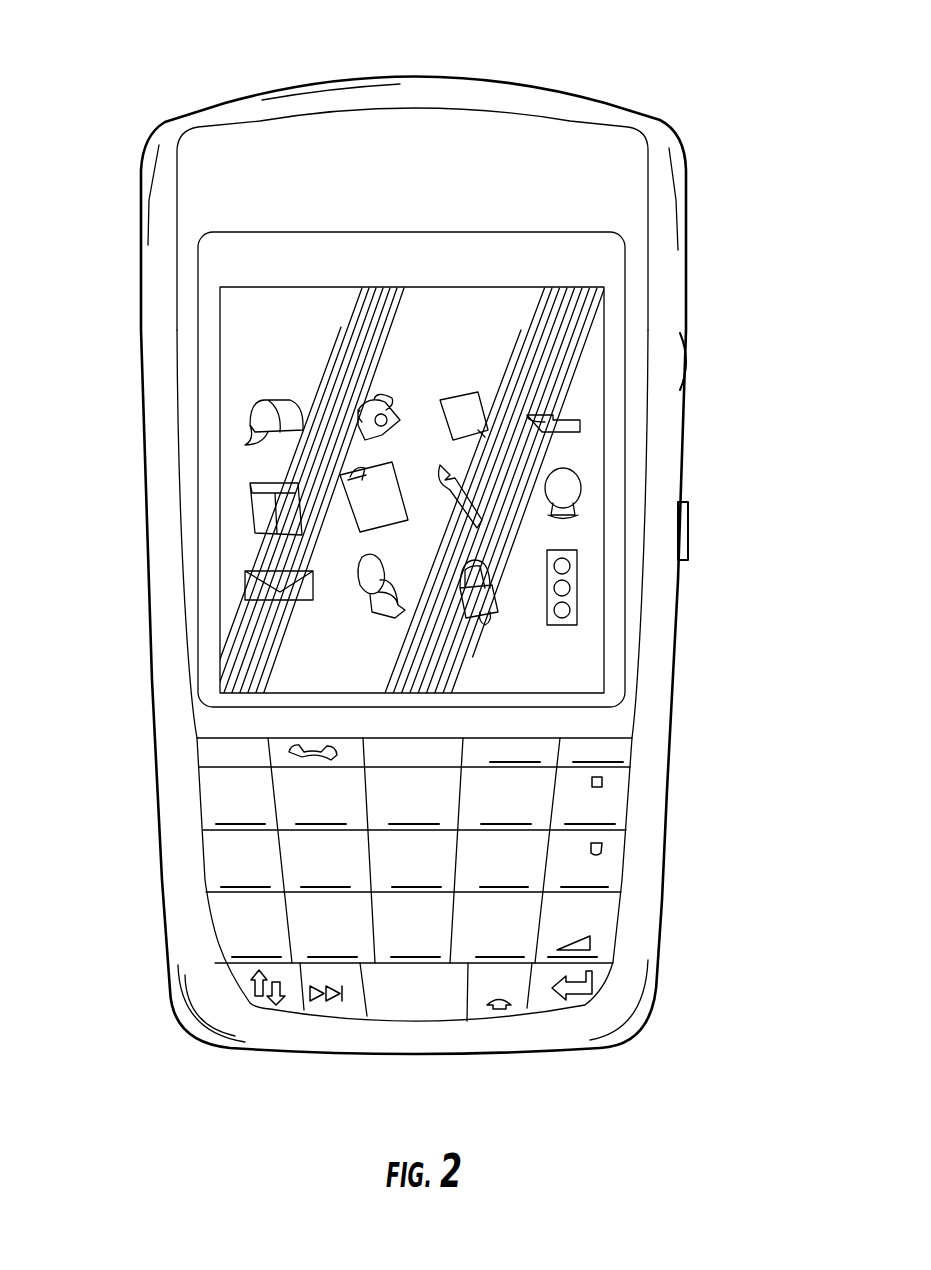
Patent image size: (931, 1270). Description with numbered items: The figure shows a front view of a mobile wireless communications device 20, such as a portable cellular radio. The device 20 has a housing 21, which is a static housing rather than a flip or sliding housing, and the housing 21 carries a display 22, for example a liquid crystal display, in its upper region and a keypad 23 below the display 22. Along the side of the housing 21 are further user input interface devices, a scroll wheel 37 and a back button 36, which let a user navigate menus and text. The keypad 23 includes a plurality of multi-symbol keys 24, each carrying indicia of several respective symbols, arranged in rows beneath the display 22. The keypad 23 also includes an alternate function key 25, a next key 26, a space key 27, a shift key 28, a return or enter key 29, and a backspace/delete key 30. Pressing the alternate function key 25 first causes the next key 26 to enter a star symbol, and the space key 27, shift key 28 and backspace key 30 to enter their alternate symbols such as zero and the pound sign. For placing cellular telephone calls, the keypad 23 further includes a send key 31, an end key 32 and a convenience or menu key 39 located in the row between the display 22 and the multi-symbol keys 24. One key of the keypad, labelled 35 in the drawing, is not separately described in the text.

The mobile wireless communications device 20 is at (708, 69).
The housing 21 is at (190, 118).
The display 22 is at (232, 393).
The keypad 23 is at (650, 797).
The multi-symbol keys 24 is at (222, 852).
The alternate function key 25 is at (245, 985).
The next key 26 is at (312, 1007).
The space key 27 is at (410, 1018).
The shift key 28 is at (517, 1001).
The return key 29 is at (590, 975).
The backspace/delete key 30 is at (600, 915).
The send key 31 is at (265, 752).
The end key 32 is at (545, 752).
The L key 35 is at (610, 858).
The back button 36 is at (688, 537).
The scroll wheel 37 is at (692, 362).
The convenience key 39 is at (437, 777).